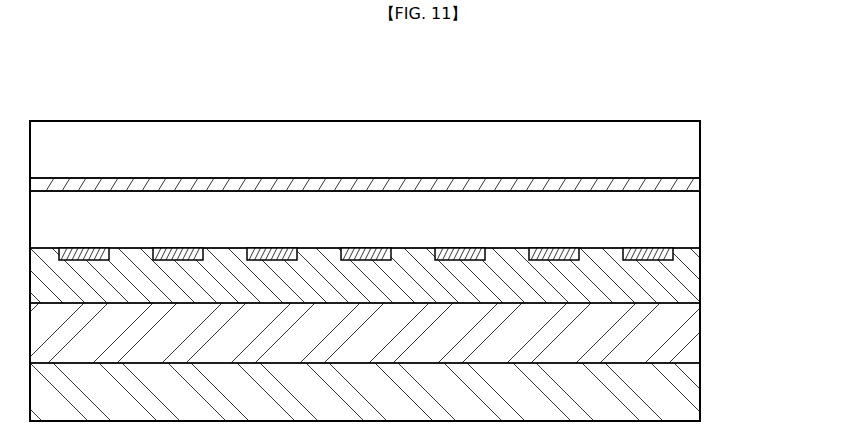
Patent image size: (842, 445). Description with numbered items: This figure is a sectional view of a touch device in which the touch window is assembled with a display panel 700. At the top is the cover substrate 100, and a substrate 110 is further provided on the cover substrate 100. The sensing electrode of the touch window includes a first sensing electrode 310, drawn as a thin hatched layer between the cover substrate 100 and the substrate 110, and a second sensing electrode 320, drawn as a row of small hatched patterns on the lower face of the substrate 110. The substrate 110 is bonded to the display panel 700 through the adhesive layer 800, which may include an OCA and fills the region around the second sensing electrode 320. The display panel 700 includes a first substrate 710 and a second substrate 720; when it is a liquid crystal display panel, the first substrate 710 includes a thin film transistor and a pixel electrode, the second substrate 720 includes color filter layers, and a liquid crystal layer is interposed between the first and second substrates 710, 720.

The cover substrate 100 is at (692, 151).
The substrate 110 is at (692, 218).
The first sensing electrode 310 is at (700, 181).
The second sensing electrode 320 is at (672, 254).
The adhesive layer 800 is at (692, 273).
The display panel 700 is at (407, 362).
The second substrate 720 is at (692, 335).
The first substrate 710 is at (382, 392).